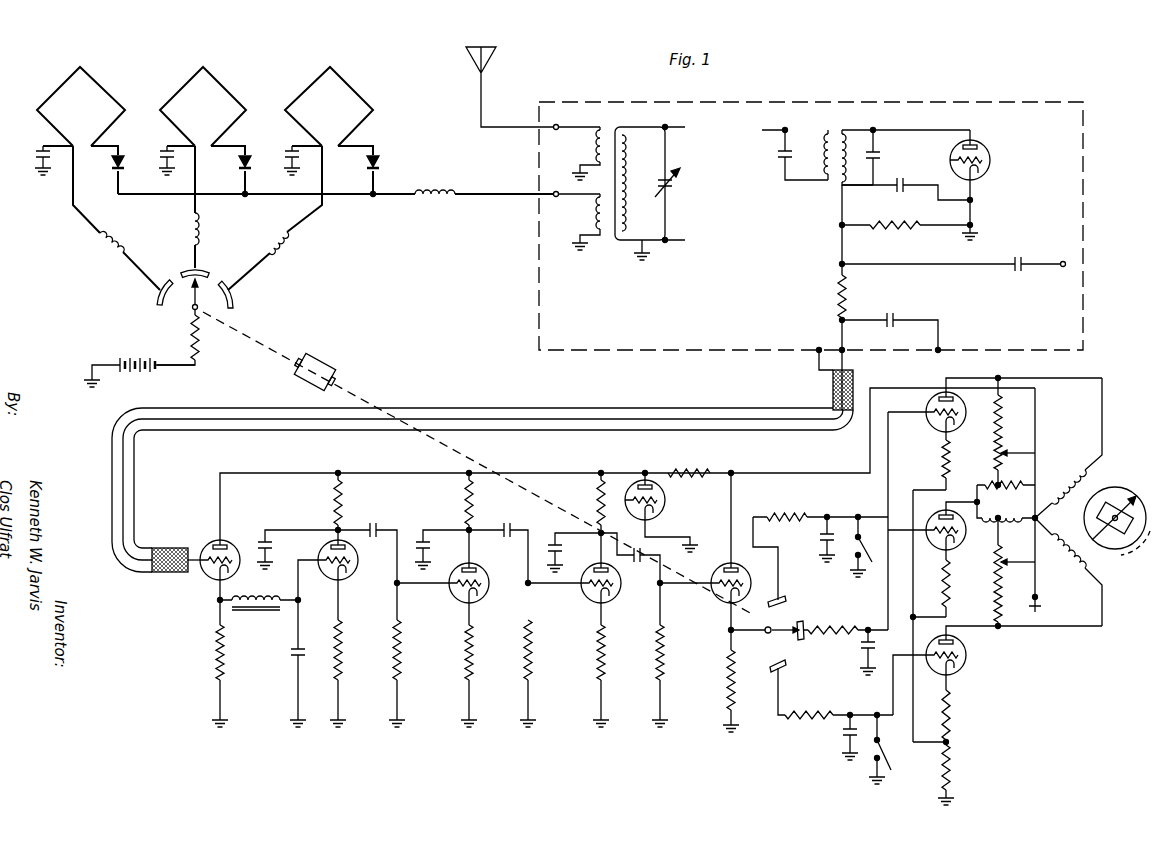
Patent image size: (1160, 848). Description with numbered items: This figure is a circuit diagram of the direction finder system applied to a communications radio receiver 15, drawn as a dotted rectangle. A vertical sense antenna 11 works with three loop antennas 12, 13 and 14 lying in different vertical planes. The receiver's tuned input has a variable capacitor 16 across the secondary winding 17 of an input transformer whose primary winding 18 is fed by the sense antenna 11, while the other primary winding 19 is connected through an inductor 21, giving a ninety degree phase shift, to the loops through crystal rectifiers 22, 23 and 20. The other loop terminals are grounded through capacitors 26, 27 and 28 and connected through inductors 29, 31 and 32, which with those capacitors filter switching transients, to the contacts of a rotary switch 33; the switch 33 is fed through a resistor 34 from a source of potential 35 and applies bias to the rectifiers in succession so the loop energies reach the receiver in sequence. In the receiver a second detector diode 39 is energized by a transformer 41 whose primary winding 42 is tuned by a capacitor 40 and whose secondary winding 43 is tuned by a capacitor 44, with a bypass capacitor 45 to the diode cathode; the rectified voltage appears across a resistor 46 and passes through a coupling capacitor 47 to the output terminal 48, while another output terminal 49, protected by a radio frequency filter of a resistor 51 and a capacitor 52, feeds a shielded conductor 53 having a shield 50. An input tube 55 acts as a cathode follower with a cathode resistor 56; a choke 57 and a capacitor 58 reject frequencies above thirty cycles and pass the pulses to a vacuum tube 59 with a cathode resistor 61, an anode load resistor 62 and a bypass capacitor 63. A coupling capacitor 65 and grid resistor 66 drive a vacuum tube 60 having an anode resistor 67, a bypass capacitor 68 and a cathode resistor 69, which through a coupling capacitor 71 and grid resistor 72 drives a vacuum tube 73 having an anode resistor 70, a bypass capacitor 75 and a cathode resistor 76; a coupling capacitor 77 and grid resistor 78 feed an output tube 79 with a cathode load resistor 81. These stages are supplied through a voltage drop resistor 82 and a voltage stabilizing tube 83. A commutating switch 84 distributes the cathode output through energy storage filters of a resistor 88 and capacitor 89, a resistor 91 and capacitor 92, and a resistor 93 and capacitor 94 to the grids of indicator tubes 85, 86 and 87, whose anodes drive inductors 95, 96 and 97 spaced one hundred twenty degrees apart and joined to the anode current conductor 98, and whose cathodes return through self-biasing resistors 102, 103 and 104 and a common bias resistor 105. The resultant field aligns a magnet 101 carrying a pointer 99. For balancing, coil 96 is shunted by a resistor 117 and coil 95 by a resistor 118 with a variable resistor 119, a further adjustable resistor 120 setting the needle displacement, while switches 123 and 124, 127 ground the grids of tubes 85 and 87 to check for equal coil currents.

The sense antenna 11 is at (494, 66).
The loop antenna 12 is at (71, 79).
The loop antenna 13 is at (194, 82).
The loop antenna 14 is at (320, 82).
The radio receiver 15 is at (790, 102).
The variable capacitor 16 is at (676, 186).
The secondary winding 17 is at (630, 202).
The primary winding 18 is at (594, 146).
The primary winding 19 is at (594, 216).
The rectifier 20 is at (379, 160).
The inductor 21 is at (444, 190).
The rectifier 22 is at (124, 158).
The rectifier 23 is at (251, 158).
The capacitor 26 is at (36, 150).
The capacitor 27 is at (163, 152).
The capacitor 28 is at (288, 152).
The inductor 29 is at (106, 246).
The inductor 31 is at (191, 230).
The inductor 32 is at (276, 240).
The rotary switch 33 is at (290, 352).
The resistor 34 is at (202, 338).
The source of potential 35 is at (137, 358).
The second detector 39 is at (991, 162).
The capacitor 40 is at (778, 156).
The transformer 41 is at (836, 188).
The primary winding 42 is at (823, 150).
The secondary winding 43 is at (848, 152).
The capacitor 44 is at (881, 155).
The bypass capacitor 45 is at (902, 193).
The resistor 46 is at (902, 235).
The coupling capacitor 47 is at (1018, 273).
The output terminal 48 is at (1065, 260).
The output terminal 49 is at (840, 342).
The shielded cable 50 is at (830, 380).
The resistor 51 is at (838, 298).
The capacitor 52 is at (896, 316).
The shielded conductor 53 is at (850, 356).
The input tube 55 is at (214, 541).
The cathode resistor 56 is at (210, 654).
The choke 57 is at (260, 598).
The capacitor 58 is at (292, 654).
The vacuum tube 59 is at (352, 576).
The vacuum tube 60 is at (485, 588).
The cathode resistor 61 is at (344, 662).
The anode load resistor 62 is at (346, 503).
The bypass capacitor 63 is at (258, 540).
The coupling capacitor 65 is at (378, 525).
The grid coupling resistor 66 is at (408, 658).
The anode resistor 67 is at (464, 496).
The bypass capacitor 68 is at (416, 540).
The cathode resistor 69 is at (476, 646).
The resistor 70 is at (596, 496).
The coupling capacitor 71 is at (512, 524).
The grid coupling resistor 72 is at (538, 662).
The vacuum tube 73 is at (618, 596).
The bypass capacitor 75 is at (548, 540).
The cathode resistor 76 is at (608, 650).
The coupling capacitor 77 is at (637, 548).
The grid coupling resistor 78 is at (668, 662).
The output tube 79 is at (747, 578).
The cathode load resistor 81 is at (738, 692).
The voltage drop resistor 82 is at (710, 468).
The voltage stabilizing tube 83 is at (670, 502).
The commutating switch 84 is at (780, 620).
The indicator tube 85 is at (928, 404).
The indicator tube 86 is at (962, 548).
The indicator tube 87 is at (968, 666).
The series resistor 88 is at (806, 512).
The bypass capacitor 89 is at (820, 538).
The resistor 91 is at (832, 625).
The bypass capacitor 92 is at (860, 650).
The resistor 93 is at (820, 712).
The bypass capacitor 94 is at (842, 736).
The inductor 95 is at (1070, 474).
The inductor 96 is at (1022, 514).
The inductor 97 is at (1062, 560).
The anode current conductor 98 is at (1042, 600).
The pointer 99 is at (1122, 496).
The magnet 101 is at (1136, 570).
The self-biasing resistor 102 is at (940, 460).
The self-biasing resistor 103 is at (954, 598).
The self-biasing resistor 104 is at (960, 712).
The common bias resistor 105 is at (958, 766).
The resistor 117 is at (986, 486).
The resistor 118 is at (1004, 425).
The variable resistor 119 is at (994, 448).
The adjustable resistor 120 is at (1004, 556).
The switch 123 is at (870, 566).
The switch 124 is at (992, 600).
The switch 127 is at (888, 764).